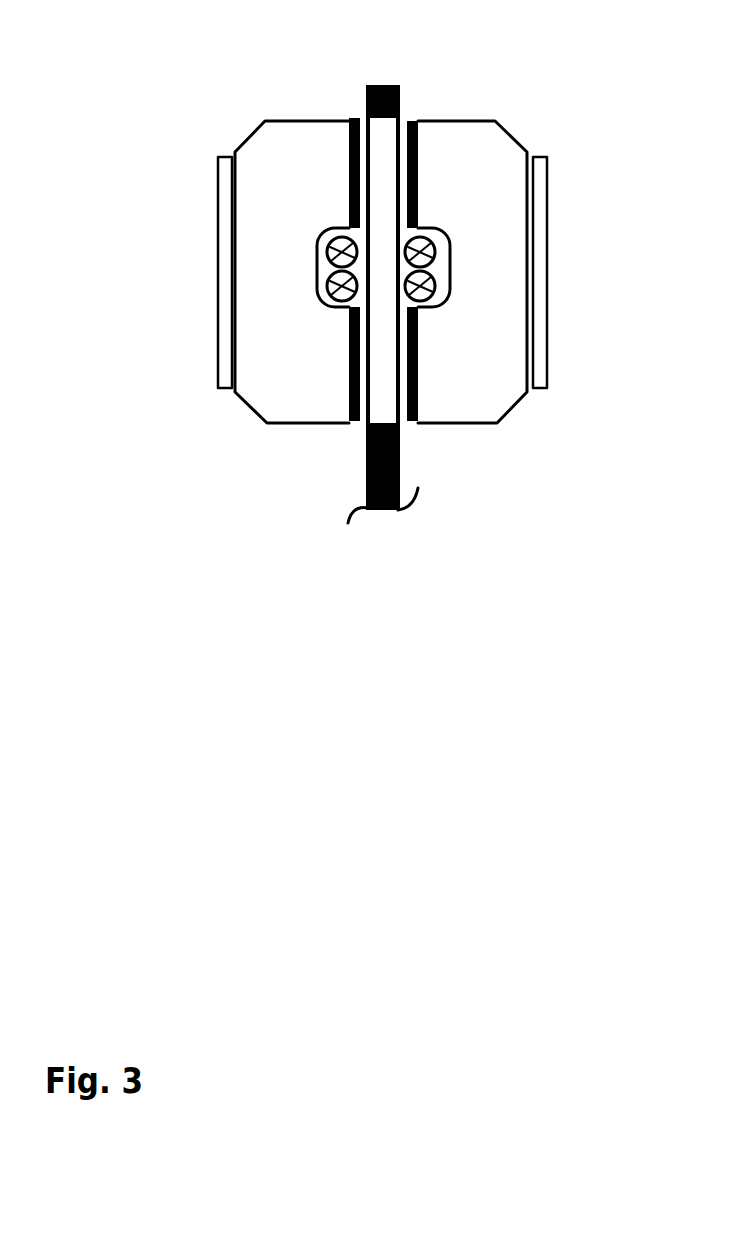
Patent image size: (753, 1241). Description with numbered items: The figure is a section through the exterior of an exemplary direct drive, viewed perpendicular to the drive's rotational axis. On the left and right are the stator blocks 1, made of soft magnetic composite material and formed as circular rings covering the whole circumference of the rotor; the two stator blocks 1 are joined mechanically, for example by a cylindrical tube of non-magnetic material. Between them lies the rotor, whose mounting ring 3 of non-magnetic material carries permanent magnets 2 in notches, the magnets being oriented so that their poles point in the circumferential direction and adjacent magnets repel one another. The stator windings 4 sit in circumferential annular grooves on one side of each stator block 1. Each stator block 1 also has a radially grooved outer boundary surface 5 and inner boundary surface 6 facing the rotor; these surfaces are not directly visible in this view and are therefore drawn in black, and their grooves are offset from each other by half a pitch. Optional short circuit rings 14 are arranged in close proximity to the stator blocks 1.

The stator block 1 is at (332, 140).
The permanent magnet 2 is at (387, 370).
The mounting ring 3 is at (367, 457).
The stator winding 4 is at (332, 252).
The outer boundary surface 5 is at (348, 118).
The inner boundary surface 6 is at (348, 357).
The short circuit ring 14 is at (217, 217).